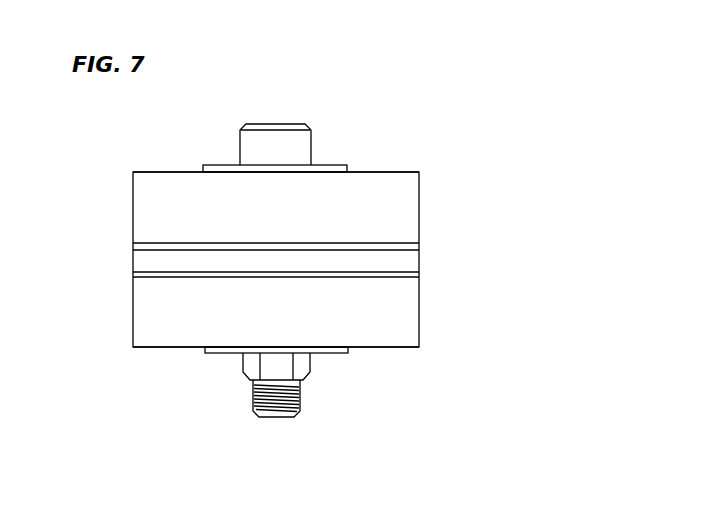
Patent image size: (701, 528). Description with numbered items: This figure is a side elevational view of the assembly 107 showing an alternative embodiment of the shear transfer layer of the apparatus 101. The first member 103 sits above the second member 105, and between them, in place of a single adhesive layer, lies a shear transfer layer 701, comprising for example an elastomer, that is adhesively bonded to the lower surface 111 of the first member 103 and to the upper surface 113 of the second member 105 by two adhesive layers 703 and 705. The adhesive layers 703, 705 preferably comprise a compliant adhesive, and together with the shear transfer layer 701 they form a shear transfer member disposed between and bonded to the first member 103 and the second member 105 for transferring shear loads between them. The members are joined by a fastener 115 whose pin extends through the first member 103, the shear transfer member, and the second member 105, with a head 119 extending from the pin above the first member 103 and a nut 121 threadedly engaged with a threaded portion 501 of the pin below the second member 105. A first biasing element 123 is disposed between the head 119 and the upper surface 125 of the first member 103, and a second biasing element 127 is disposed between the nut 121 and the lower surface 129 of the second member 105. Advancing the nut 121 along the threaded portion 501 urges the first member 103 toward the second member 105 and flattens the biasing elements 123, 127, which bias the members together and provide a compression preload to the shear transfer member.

The apparatus 101 is at (313, 106).
The assembly 107 is at (459, 153).
The first member 103 is at (299, 219).
The second member 105 is at (300, 321).
The lower surface 111 is at (405, 250).
The upper surface 113 is at (157, 272).
The fastener 115 is at (238, 138).
The head 119 is at (303, 137).
The nut 121 is at (250, 368).
The first biasing element 123 is at (208, 167).
The upper surface 125 is at (387, 172).
The second biasing element 127 is at (217, 353).
The lower surface 129 is at (133, 347).
The threaded portion 501 is at (253, 402).
The shear transfer layer 701 is at (405, 266).
The adhesive layer 703 is at (133, 247).
The adhesive layer 705 is at (133, 276).